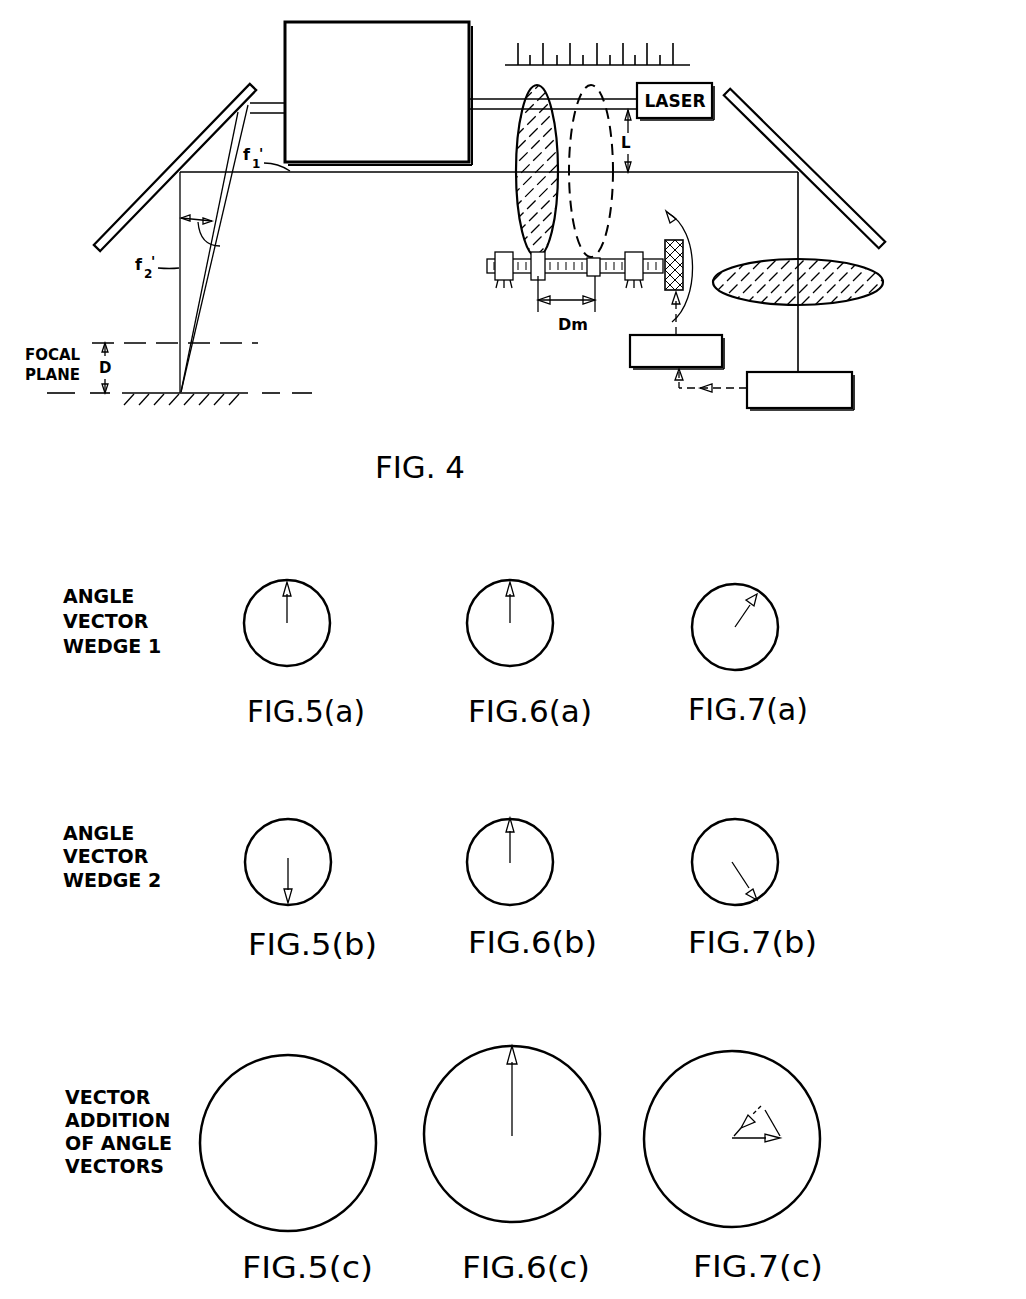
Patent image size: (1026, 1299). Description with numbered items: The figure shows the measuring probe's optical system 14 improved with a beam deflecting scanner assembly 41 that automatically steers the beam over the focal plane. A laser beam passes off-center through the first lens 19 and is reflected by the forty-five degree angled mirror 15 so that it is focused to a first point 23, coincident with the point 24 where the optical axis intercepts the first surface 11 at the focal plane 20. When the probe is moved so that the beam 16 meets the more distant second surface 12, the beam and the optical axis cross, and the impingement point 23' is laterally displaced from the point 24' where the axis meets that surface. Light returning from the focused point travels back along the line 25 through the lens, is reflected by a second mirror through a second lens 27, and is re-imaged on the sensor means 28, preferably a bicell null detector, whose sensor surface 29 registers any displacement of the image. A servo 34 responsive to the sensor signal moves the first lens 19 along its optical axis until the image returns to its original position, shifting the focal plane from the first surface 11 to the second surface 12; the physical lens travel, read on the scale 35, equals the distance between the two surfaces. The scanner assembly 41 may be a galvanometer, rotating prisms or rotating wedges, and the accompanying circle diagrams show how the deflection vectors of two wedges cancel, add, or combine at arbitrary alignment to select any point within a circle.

The first surface 11 is at (235, 343).
The second surface 12 is at (232, 394).
The optical system 14 is at (820, 80).
The 45° angled mirror 15 is at (212, 128).
The beam 16 is at (226, 214).
The first lens 19 is at (517, 141).
The focal plane 20 is at (93, 395).
The first point 23 is at (156, 326).
The point 24 is at (222, 326).
The impingement point 23' is at (157, 377).
The point 24' is at (208, 377).
The line 25 is at (779, 258).
The second lens 27 is at (765, 120).
The sensor means 28 is at (780, 408).
The sensor surface 29 is at (840, 372).
The servo 34 is at (630, 350).
The scale 35 is at (692, 68).
The scanner assembly 41 is at (471, 34).